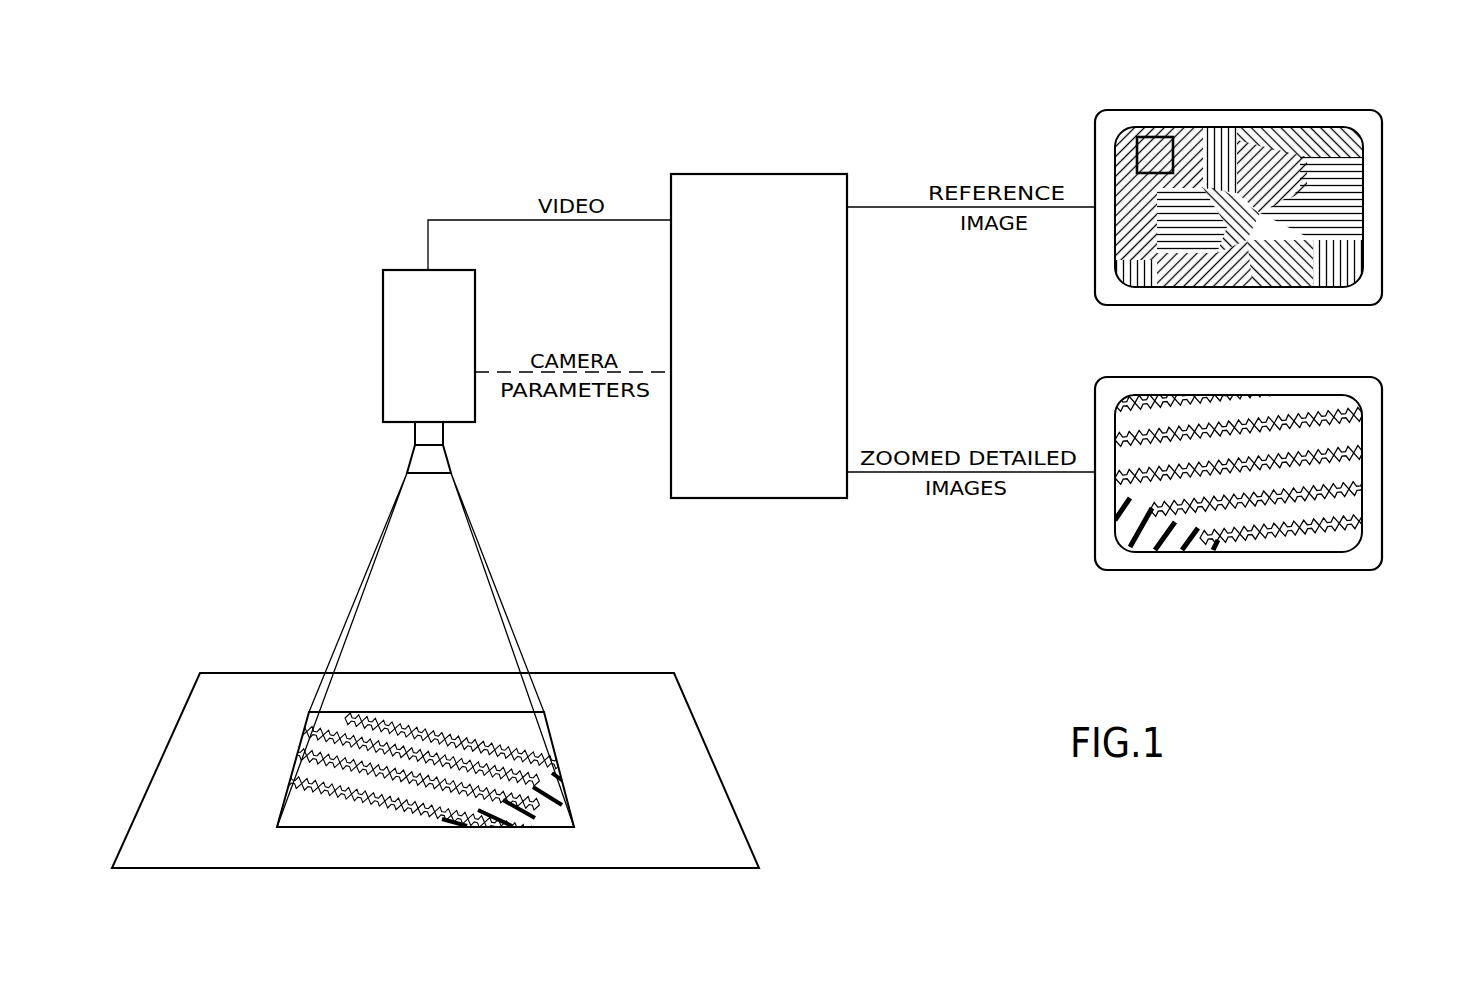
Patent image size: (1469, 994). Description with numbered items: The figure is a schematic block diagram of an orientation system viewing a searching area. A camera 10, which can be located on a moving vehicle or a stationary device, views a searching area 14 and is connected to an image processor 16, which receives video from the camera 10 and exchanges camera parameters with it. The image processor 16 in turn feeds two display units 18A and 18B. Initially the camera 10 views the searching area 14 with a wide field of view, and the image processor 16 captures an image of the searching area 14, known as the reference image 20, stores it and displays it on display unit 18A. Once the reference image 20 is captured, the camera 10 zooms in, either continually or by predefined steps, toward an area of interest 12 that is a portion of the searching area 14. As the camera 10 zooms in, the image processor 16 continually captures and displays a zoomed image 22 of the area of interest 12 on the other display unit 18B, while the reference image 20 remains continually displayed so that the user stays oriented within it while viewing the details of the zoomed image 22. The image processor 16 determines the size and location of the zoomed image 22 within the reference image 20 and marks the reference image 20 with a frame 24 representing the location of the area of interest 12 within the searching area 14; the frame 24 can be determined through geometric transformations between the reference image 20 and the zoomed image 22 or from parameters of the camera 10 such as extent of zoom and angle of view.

The camera 10 is at (383, 362).
The area of interest 12 is at (550, 779).
The searching area 14 is at (565, 678).
The image processor 16 is at (725, 174).
The display unit 18A is at (1229, 178).
The display unit 18B is at (1282, 451).
The reference image 20 is at (1147, 140).
The zoomed image 22 is at (1283, 515).
The frame 24 is at (1123, 140).